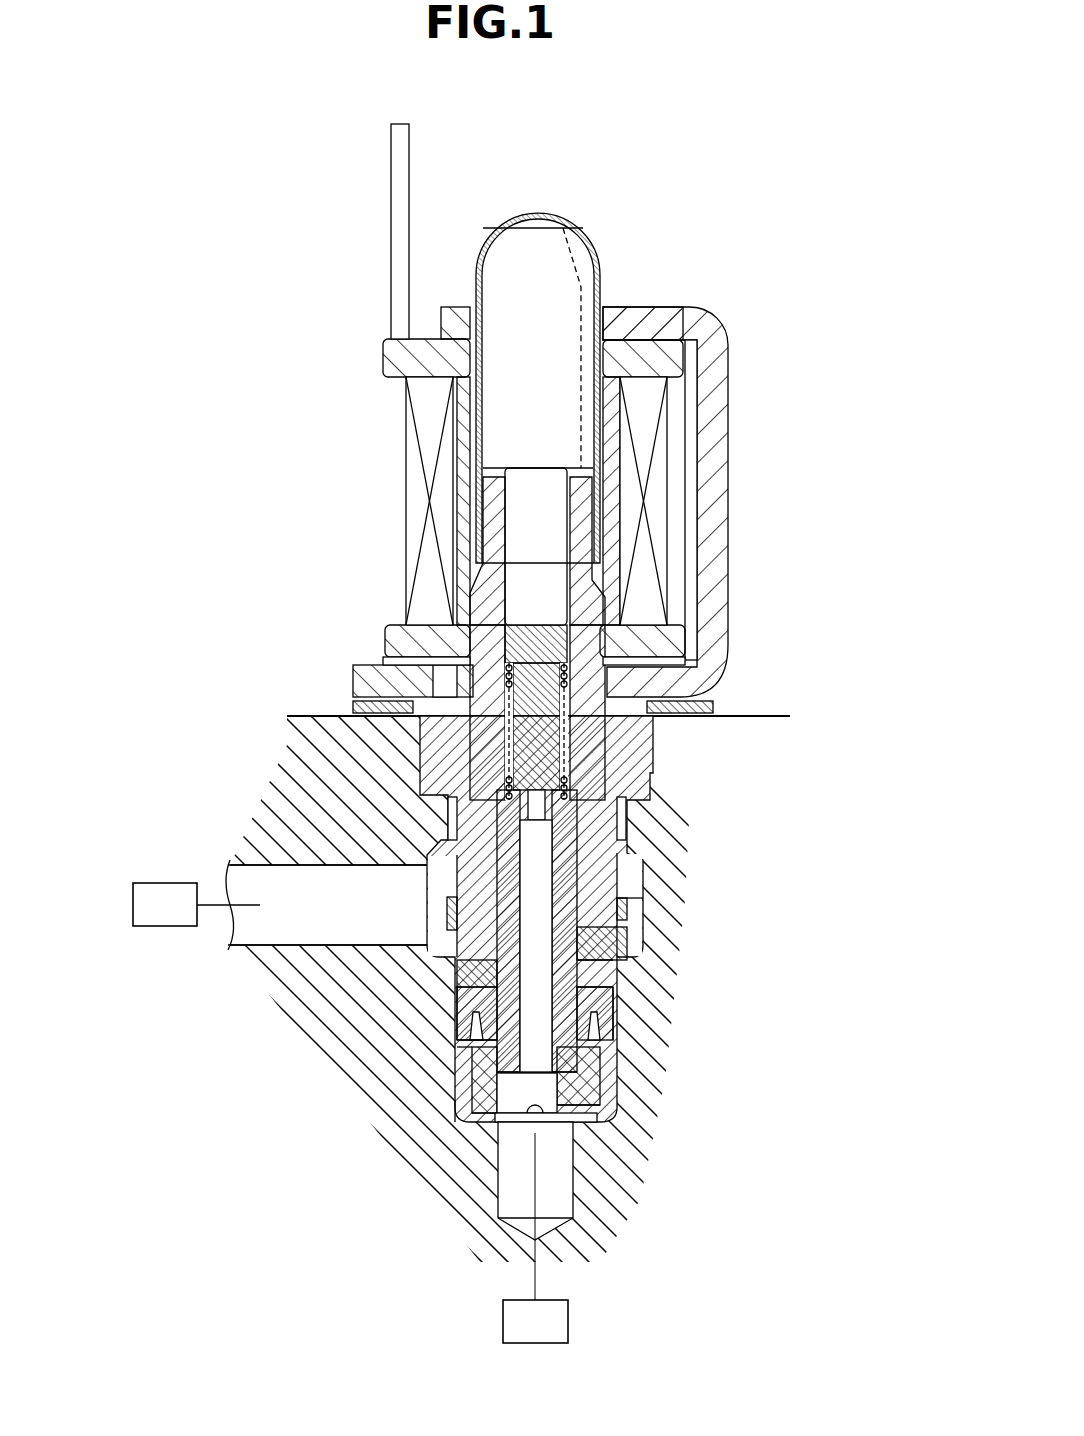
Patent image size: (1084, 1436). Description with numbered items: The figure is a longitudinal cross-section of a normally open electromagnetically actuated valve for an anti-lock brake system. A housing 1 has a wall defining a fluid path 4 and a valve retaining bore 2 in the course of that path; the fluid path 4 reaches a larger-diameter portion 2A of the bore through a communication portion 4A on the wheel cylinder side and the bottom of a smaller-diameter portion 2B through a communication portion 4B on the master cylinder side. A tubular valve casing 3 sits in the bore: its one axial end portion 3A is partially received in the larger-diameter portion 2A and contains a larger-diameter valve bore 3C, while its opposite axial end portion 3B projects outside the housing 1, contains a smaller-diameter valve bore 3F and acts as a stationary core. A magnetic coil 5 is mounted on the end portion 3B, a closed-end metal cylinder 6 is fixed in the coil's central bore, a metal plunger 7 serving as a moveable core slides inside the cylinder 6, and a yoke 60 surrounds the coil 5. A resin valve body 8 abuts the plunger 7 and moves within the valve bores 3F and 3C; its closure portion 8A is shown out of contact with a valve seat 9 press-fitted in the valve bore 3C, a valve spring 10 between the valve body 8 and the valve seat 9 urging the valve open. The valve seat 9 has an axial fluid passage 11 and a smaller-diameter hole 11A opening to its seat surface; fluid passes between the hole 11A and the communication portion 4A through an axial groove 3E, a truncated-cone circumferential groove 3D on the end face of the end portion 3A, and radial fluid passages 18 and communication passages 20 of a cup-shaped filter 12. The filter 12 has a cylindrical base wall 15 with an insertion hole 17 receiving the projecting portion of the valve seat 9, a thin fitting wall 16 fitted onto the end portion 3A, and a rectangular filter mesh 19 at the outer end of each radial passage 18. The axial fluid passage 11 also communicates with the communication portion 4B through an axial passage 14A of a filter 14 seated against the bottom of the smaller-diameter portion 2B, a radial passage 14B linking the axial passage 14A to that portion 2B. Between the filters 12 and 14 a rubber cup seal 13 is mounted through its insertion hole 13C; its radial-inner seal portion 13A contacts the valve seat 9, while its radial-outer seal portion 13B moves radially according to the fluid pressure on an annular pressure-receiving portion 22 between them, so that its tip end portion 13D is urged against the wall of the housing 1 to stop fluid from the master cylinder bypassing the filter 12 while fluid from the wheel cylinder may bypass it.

The housing 1 is at (763, 720).
The valve retaining bore 2 is at (412, 854).
The larger-diameter portion 2A is at (633, 868).
The smaller-diameter portion 2B is at (430, 1112).
The valve casing 3 is at (622, 611).
The one axial end portion 3A is at (627, 828).
The opposite axial end portion 3B is at (582, 538).
The larger-diameter valve bore 3C is at (505, 832).
The circumferential groove 3D is at (627, 920).
The axial groove 3E is at (630, 833).
The smaller-diameter valve bore 3F is at (565, 525).
The fluid path 4 is at (296, 858).
The communication portion 4A is at (353, 930).
The communication portion 4B is at (560, 1150).
The magnetic coil 5 is at (668, 420).
The metal cylinder 6 is at (588, 242).
The metal plunger 7 is at (555, 297).
The valve body 8 is at (520, 563).
The closure portion 8A is at (525, 788).
The valve seat 9 is at (457, 883).
The valve spring 10 is at (515, 680).
The axial fluid passage 11 is at (540, 1052).
The smaller-diameter hole 11A is at (655, 793).
The filter 12 is at (635, 925).
The seal 13 is at (620, 1025).
The radial-inner seal portion 13A is at (460, 1080).
The radial-outer seal portion 13B is at (455, 1030).
The insertion hole 13C is at (475, 1125).
The tip end portion 13D is at (630, 1040).
The filter 14 is at (585, 1093).
The axial passage 14A is at (520, 1118).
The radial passage 14B is at (570, 1107).
The base wall 15 is at (655, 965).
The fitting wall 16 is at (630, 903).
The insertion hole 17 is at (612, 982).
The radial fluid passages 18 is at (432, 940).
The filter mesh 19 is at (352, 940).
The communication passages 20 is at (455, 1000).
The pressure-receiving portion 22 is at (458, 1060).
The yoke 60 is at (745, 358).